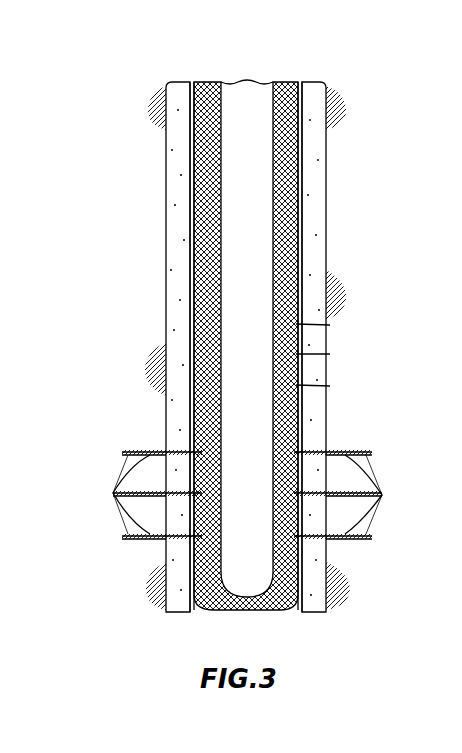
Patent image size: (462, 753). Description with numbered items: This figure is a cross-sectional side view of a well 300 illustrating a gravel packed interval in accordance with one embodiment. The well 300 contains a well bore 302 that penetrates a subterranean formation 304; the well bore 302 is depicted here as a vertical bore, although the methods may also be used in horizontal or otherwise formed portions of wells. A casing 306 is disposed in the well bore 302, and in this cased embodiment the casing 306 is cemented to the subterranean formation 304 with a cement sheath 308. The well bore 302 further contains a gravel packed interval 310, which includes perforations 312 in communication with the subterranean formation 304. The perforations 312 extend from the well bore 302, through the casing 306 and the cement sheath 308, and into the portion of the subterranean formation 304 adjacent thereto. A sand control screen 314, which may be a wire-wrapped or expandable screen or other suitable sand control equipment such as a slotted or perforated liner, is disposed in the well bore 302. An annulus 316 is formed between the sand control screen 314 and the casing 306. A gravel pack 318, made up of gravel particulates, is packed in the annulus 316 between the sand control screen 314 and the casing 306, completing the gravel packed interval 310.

The well 300 is at (152, 70).
The well bore 302 is at (327, 154).
The subterranean formation 304 is at (397, 297).
The casing 306 is at (306, 210).
The cement sheath 308 is at (176, 229).
The gravel packed interval 310 is at (163, 421).
The perforations 312 is at (114, 495).
The sand control screen 314 is at (301, 324).
The annulus 316 is at (301, 354).
The gravel pack 318 is at (301, 385).